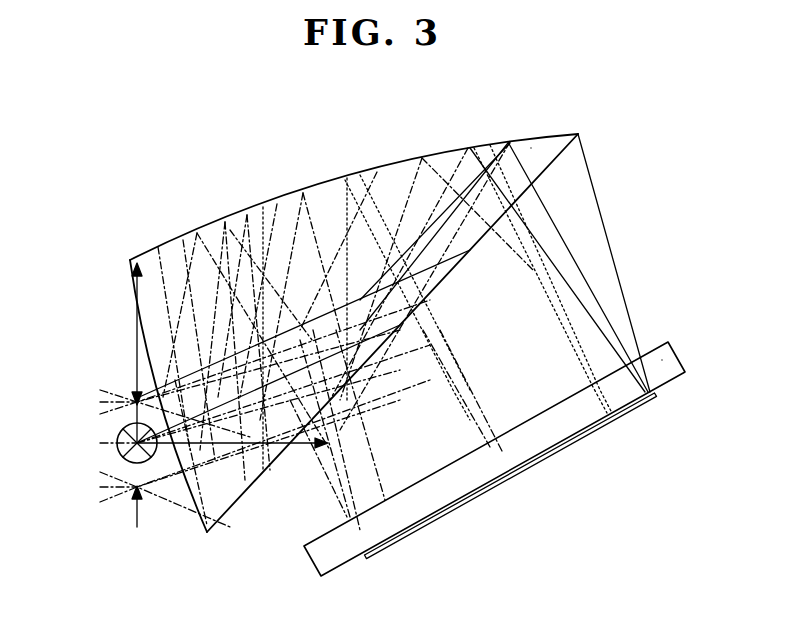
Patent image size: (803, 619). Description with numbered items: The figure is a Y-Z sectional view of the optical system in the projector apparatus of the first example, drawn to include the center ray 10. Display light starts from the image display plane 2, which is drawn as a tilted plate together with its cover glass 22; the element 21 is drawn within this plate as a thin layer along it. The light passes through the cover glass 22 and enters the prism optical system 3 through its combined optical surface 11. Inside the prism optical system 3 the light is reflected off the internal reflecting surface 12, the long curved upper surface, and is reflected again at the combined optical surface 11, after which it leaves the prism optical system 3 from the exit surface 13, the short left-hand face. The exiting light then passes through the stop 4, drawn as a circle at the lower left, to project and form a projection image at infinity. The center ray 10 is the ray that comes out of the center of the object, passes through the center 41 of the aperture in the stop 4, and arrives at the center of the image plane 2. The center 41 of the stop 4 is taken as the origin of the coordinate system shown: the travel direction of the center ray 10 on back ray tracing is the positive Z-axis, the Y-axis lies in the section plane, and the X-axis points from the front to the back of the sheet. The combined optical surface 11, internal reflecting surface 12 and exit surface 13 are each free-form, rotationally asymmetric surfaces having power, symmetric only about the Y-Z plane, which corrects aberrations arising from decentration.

The image plane 2 is at (543, 460).
The prism optical system 3 is at (531, 148).
The stop 4 is at (135, 492).
The center ray 10 is at (440, 352).
The combined optical surface 11 is at (522, 195).
The internal reflecting surface 12 is at (326, 182).
The exit surface 13 is at (190, 494).
The light receiving element 21 is at (507, 478).
The cover glass 22 is at (662, 361).
The center of aperture in stop 41 is at (134, 441).